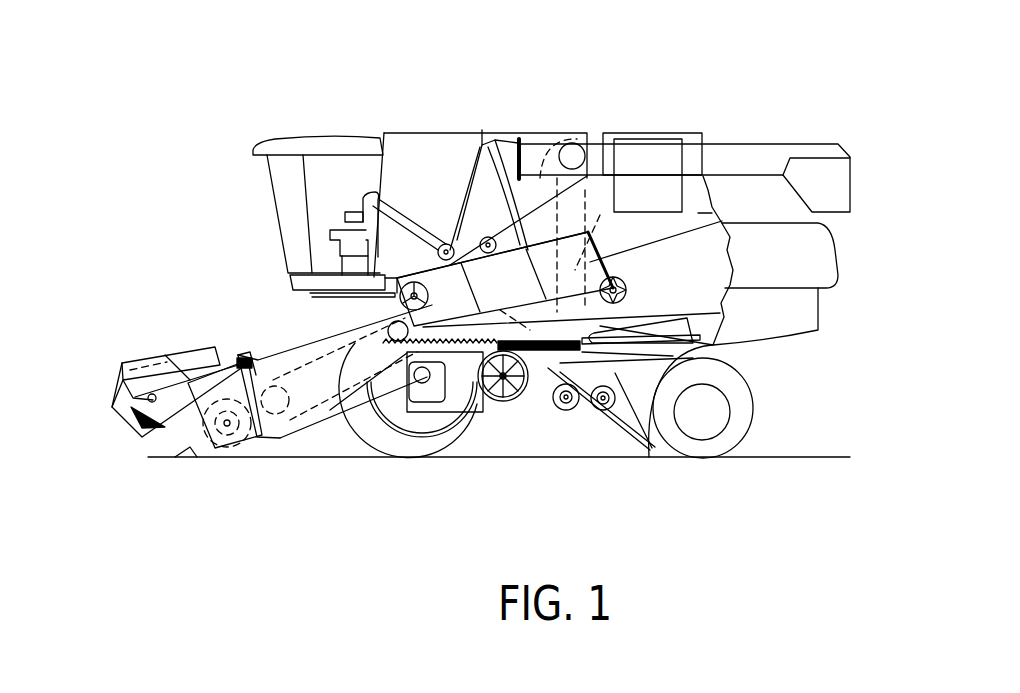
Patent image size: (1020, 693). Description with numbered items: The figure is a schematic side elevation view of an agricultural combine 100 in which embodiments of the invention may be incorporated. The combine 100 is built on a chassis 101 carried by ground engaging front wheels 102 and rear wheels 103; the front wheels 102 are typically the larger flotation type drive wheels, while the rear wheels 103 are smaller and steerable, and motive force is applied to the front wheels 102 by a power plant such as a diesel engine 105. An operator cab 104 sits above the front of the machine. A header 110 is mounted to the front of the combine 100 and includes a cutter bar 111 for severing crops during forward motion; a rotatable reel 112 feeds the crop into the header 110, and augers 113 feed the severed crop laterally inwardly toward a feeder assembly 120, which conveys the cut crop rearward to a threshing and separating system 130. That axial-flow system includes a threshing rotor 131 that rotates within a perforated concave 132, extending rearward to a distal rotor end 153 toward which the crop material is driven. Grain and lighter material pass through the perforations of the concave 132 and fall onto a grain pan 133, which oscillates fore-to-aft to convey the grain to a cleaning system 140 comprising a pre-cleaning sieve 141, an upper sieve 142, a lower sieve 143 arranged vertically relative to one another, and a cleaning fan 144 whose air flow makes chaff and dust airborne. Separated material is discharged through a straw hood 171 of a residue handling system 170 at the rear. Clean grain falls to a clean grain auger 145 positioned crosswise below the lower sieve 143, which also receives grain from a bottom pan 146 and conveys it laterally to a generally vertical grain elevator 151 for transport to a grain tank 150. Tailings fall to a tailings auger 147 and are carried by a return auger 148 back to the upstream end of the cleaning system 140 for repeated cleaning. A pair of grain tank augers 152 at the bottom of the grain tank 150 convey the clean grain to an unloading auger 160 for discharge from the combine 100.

The combine 100 is at (303, 112).
The chassis 101 is at (712, 348).
The front wheels 102 is at (371, 443).
The rear wheels 103 is at (748, 416).
The operator cab 104 is at (268, 205).
The diesel engine 105 is at (640, 140).
The header 110 is at (159, 318).
The cutter bar 111 is at (182, 458).
The rotatable reel 112 is at (116, 386).
The augers 113 is at (243, 460).
The feeder assembly 120 is at (287, 355).
The threshing and separating system 130 is at (352, 308).
The threshing rotor 131 is at (412, 262).
The perforated concave 132 is at (482, 130).
The grain pan 133 is at (358, 392).
The cleaning system 140 is at (547, 434).
The pre-cleaning sieve 141 is at (636, 290).
The upper sieve 142 is at (653, 337).
The lower sieve 143 is at (655, 447).
The cleaning fan 144 is at (487, 393).
The clean grain auger 145 is at (567, 410).
The bottom pan 146 is at (702, 412).
The tailings auger 147 is at (603, 411).
The return auger 148 is at (508, 380).
The grain tank 150 is at (408, 138).
The grain elevator 151 is at (600, 215).
The grain tank augers 152 is at (447, 246).
The distal rotor end 153 is at (598, 258).
The unloading auger 160 is at (755, 160).
The residue handling system 170 is at (824, 352).
The straw hood 171 is at (822, 254).